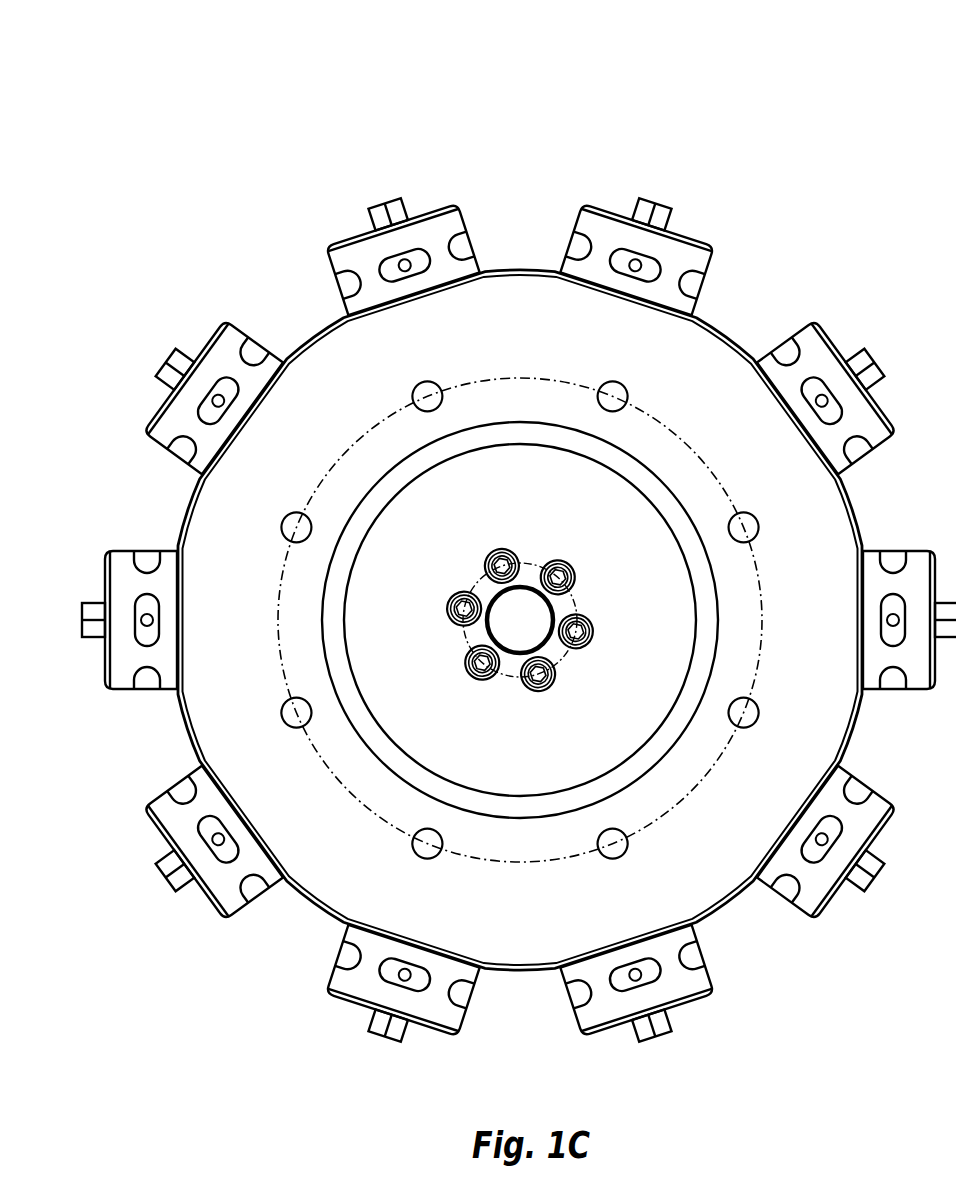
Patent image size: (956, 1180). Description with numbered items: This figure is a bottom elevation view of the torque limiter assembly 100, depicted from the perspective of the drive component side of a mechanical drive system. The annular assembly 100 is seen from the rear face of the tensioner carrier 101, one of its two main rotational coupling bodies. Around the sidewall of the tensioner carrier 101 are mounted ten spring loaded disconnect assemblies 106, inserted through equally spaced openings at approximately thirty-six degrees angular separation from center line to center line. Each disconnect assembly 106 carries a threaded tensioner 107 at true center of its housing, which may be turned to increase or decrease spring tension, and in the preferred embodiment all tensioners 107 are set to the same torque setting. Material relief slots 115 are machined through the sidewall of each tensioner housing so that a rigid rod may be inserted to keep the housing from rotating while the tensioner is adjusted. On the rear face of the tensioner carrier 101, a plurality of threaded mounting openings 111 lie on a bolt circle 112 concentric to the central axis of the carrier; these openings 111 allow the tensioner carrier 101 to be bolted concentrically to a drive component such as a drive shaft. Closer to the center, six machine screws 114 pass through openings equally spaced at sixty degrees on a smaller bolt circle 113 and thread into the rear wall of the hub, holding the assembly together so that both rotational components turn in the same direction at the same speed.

The torque limiter assembly 100 is at (668, 84).
The tensioner carrier 101 is at (228, 571).
The disconnect assembly 106 is at (337, 282).
The threaded tensioner 107 is at (665, 203).
The threaded mounting opening 111 is at (750, 697).
The bolt circle 112 is at (362, 802).
The bolt circle 113 is at (466, 628).
The machine screw 114 is at (527, 686).
The material relief slot 115 is at (702, 983).